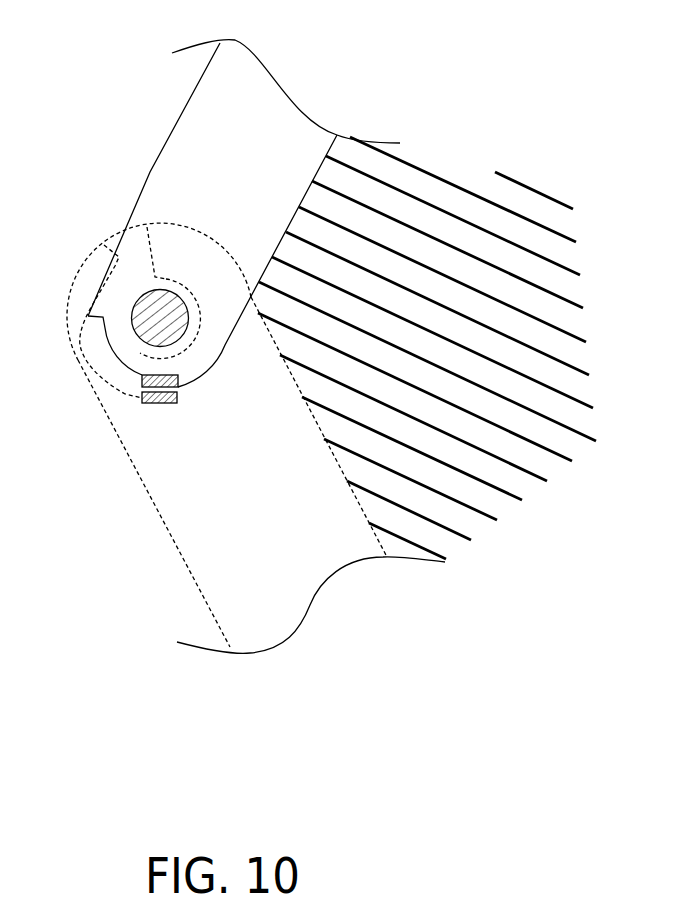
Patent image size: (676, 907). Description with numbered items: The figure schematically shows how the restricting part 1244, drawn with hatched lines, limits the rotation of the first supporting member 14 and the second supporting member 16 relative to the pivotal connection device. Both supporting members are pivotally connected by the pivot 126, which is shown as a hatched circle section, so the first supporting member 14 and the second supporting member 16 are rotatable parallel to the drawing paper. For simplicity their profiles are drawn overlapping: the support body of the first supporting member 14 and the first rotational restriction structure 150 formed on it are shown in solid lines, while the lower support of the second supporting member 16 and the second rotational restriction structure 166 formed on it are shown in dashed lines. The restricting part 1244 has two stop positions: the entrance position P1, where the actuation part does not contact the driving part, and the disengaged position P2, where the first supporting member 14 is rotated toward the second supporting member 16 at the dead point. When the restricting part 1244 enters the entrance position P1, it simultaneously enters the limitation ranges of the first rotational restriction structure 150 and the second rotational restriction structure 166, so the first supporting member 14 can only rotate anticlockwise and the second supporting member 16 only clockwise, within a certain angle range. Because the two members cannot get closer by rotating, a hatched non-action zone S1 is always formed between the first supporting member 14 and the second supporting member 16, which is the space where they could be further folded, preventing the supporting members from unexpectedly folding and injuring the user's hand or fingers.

The first supporting member 14 is at (185, 140).
The second supporting member 16 is at (190, 535).
The pivot 126 is at (157, 320).
The first rotational restriction structure 150 is at (110, 348).
The second rotational restriction structure 166 is at (192, 343).
The restricting part 1244 is at (163, 404).
The entrance position P1 is at (142, 380).
The disengaged position P2 is at (150, 402).
The non-action zone S1 is at (452, 346).